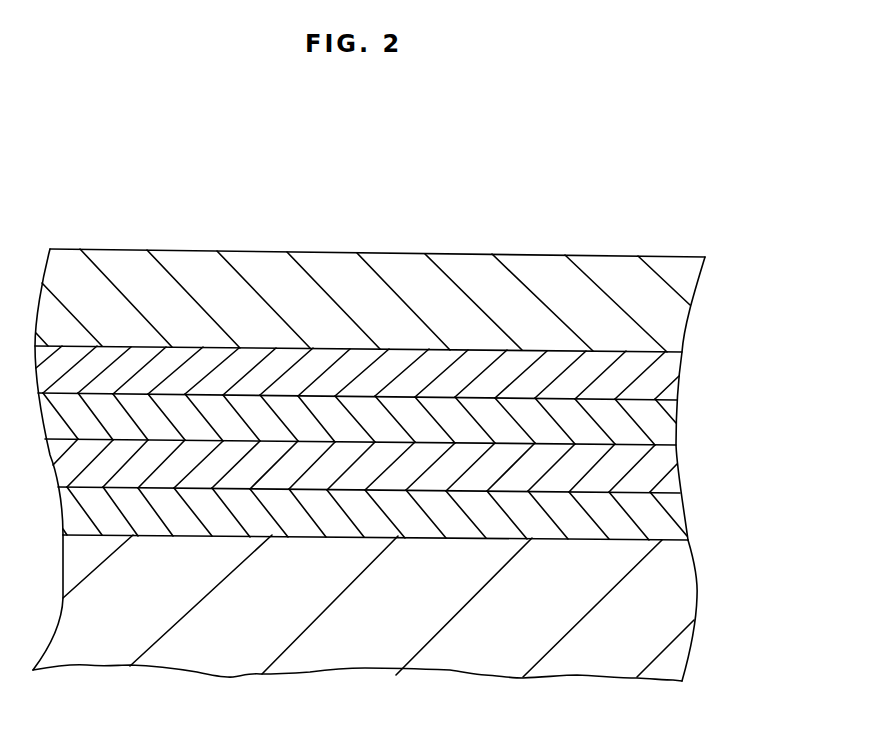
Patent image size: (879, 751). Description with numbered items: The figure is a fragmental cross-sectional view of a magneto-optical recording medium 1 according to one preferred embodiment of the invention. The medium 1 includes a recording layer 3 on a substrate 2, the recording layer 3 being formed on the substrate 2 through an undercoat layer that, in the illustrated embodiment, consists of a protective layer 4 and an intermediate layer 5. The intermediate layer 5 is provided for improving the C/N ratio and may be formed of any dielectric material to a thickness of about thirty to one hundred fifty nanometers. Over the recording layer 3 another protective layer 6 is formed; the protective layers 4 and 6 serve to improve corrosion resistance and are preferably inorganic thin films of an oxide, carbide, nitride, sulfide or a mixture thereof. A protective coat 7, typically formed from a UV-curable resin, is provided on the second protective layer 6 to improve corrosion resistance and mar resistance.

The magneto-optical recording medium 1 is at (346, 233).
The substrate 2 is at (677, 665).
The recording layer 3 is at (667, 428).
The protective layer 4 is at (672, 530).
The intermediate layer 5 is at (673, 482).
The protective layer 6 is at (667, 377).
The protective coat 7 is at (677, 320).